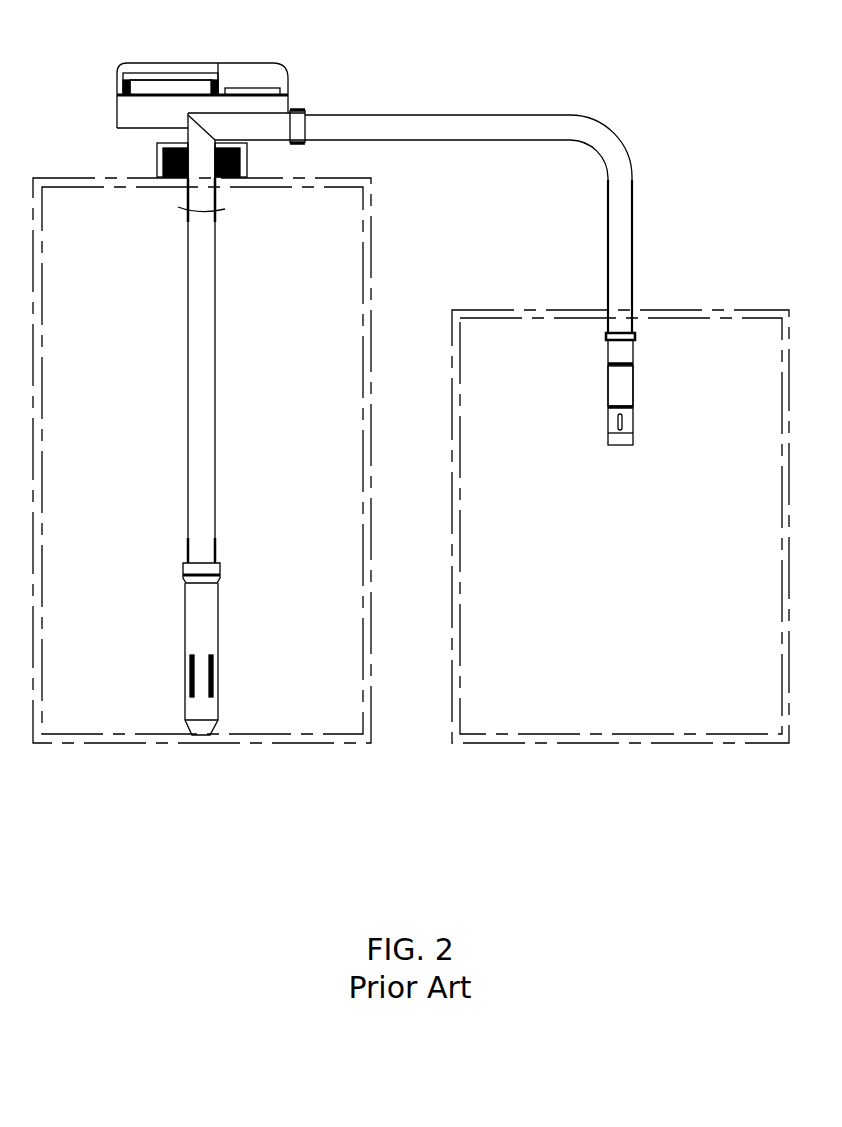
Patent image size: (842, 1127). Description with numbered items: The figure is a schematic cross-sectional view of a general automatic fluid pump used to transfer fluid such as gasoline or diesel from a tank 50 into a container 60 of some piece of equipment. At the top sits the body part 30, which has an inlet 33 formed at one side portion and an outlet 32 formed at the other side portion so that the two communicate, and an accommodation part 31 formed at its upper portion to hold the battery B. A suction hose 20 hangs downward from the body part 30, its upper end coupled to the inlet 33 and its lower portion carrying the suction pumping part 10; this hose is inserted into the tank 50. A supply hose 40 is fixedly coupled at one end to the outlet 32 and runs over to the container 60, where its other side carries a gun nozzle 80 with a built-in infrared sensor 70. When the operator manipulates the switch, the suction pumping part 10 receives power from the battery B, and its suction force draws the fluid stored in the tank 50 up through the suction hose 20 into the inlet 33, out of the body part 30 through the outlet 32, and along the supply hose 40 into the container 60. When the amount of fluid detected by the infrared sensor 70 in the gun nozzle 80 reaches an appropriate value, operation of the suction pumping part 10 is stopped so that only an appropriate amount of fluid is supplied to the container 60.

The suction pumping part 10 is at (207, 643).
The suction hose 20 is at (213, 350).
The body part 30 is at (245, 72).
The accommodation part 31 is at (137, 77).
The battery B is at (162, 85).
The outlet 32 is at (312, 127).
The inlet 33 is at (190, 210).
The supply hose 40 is at (433, 115).
The tank 50 is at (135, 743).
The container 60 is at (578, 743).
The infrared sensor 70 is at (632, 416).
The gun nozzle 80 is at (620, 382).